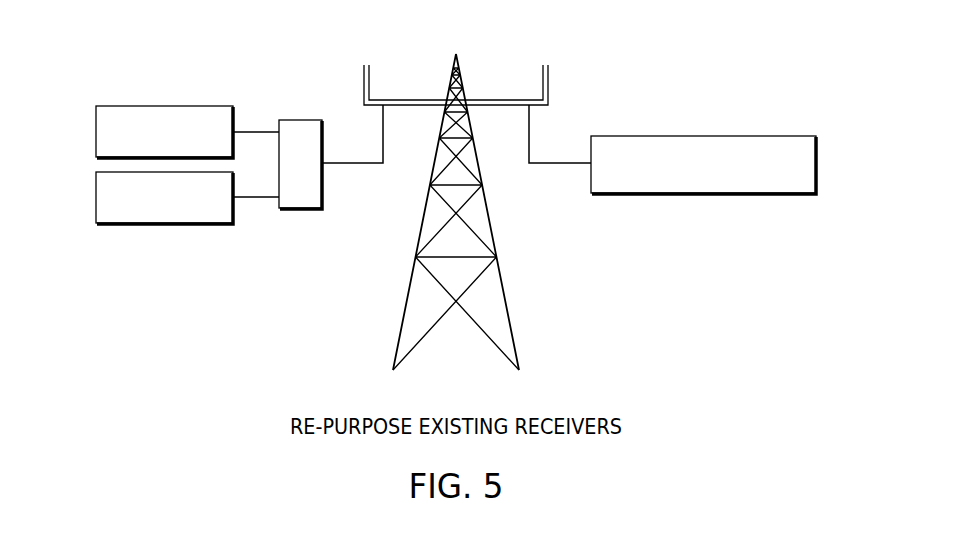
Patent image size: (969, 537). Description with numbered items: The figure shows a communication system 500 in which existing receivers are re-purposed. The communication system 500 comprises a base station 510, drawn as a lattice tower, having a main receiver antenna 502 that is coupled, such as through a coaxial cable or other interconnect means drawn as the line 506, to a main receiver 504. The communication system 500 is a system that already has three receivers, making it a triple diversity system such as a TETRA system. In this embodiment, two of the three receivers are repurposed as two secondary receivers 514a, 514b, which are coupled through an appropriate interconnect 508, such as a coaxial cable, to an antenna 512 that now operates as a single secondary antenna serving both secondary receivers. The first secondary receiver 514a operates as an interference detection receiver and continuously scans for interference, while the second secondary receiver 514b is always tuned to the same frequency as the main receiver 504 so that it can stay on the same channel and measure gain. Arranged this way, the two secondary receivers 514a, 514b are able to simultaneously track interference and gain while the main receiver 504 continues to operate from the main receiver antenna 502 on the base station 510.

The communication system 500 is at (745, 57).
The main receiver antenna 502 is at (548, 85).
The main receiver 504 is at (817, 165).
The main receiver feed line 506 is at (554, 167).
The interconnect 508 is at (362, 167).
The base station 510 is at (413, 268).
The antenna 512 is at (364, 86).
The first secondary receiver 514a is at (96, 134).
The second secondary receiver 514b is at (96, 199).